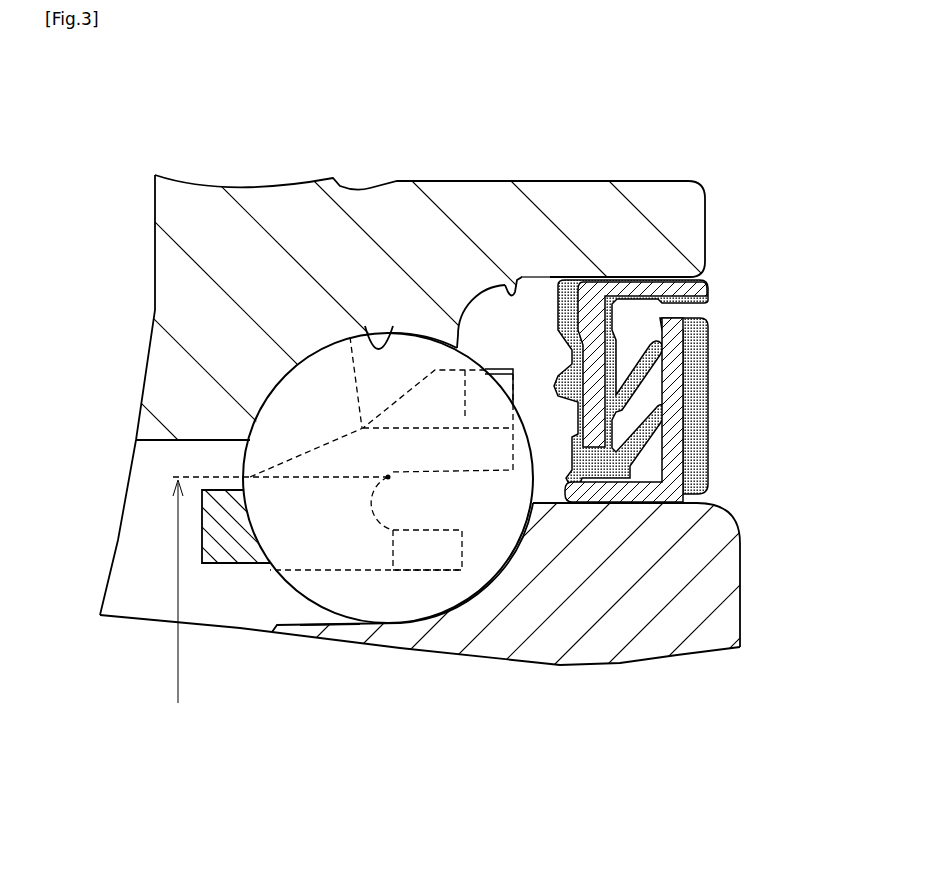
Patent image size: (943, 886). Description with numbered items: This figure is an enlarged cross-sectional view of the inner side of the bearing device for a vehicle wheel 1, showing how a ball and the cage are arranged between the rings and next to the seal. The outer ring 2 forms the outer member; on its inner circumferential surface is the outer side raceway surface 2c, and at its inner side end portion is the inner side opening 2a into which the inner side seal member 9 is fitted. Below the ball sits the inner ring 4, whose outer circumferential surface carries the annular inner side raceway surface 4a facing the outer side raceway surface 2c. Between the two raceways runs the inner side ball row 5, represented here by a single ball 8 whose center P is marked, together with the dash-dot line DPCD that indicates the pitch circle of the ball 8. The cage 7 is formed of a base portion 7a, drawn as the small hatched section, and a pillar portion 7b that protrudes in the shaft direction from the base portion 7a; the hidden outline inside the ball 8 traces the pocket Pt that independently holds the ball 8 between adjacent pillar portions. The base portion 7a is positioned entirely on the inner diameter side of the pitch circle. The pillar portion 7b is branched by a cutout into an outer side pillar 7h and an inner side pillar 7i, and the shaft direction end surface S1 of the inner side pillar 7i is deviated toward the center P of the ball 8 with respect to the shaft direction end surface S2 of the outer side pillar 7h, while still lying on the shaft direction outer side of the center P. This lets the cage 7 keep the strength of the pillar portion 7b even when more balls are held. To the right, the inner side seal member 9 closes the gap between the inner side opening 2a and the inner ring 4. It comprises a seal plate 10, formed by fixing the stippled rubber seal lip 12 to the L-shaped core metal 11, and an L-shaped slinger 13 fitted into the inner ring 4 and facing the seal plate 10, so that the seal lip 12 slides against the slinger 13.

The bearing device for a vehicle wheel 1 is at (108, 108).
The outer ring 2 is at (500, 136).
The inner side opening 2a is at (510, 295).
The outer side raceway surface 2c is at (382, 347).
The inner ring 4 is at (522, 707).
The inner side raceway surface 4a is at (466, 596).
The inner side ball row 5 is at (350, 726).
The cage 7 is at (330, 690).
The base portion 7a is at (233, 560).
The pillar portion 7b is at (332, 627).
The outer side pillar 7h is at (350, 337).
The inner side pillar 7i is at (432, 577).
The ball 8 is at (378, 608).
The inner side seal member 9 is at (795, 306).
The seal plate 10 is at (756, 290).
The core metal 11 is at (706, 296).
The seal lip 12 is at (662, 345).
The slinger 13 is at (707, 362).
The shaft direction end surface of the inner side pillar S1 is at (462, 550).
The shaft direction end surface of the outer side pillar S2 is at (513, 417).
The center of the ball P is at (390, 479).
The pocket Pt is at (356, 503).
The pitch circle PCD DPCD is at (259, 592).